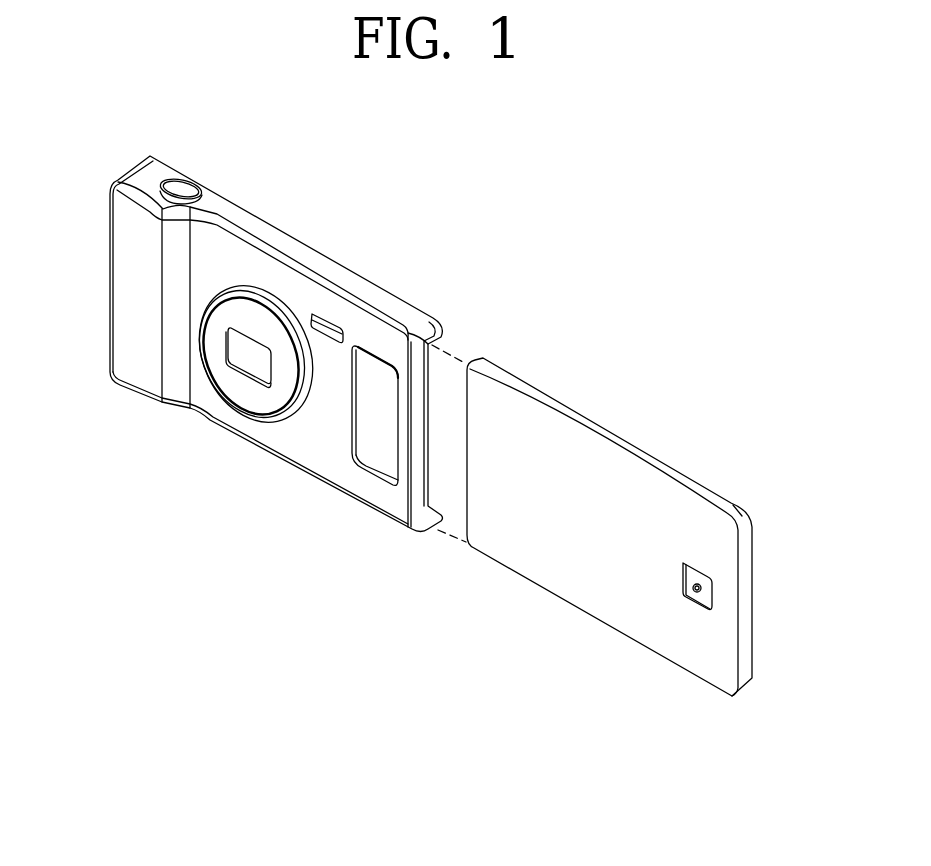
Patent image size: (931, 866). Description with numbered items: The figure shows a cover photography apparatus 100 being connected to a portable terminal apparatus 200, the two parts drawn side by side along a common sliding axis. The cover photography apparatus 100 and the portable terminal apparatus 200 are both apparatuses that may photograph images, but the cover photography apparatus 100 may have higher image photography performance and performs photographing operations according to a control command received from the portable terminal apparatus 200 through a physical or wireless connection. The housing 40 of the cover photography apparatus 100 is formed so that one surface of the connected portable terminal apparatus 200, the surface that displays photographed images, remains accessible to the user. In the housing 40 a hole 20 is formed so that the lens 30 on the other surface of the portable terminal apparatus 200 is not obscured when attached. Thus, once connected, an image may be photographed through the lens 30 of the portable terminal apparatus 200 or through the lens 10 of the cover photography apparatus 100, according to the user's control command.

The cover photography apparatus 100 is at (110, 267).
The lens 10 is at (242, 392).
The hole 20 is at (380, 375).
The lens 30 is at (708, 593).
The housing 40 is at (215, 247).
The portable terminal apparatus 200 is at (728, 678).